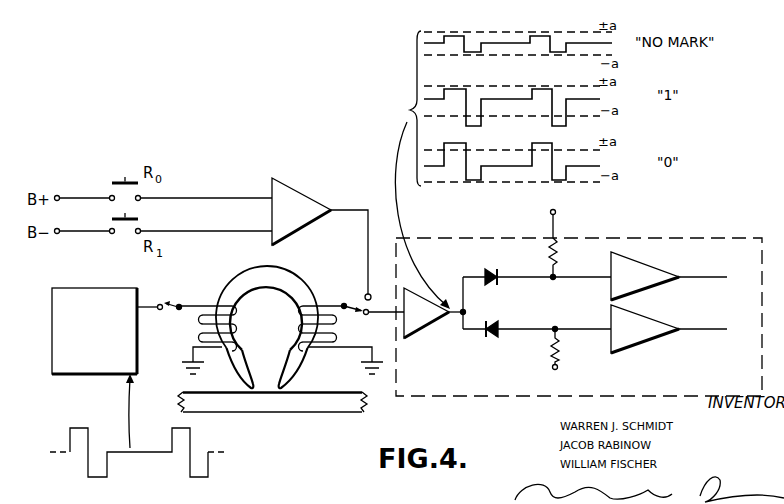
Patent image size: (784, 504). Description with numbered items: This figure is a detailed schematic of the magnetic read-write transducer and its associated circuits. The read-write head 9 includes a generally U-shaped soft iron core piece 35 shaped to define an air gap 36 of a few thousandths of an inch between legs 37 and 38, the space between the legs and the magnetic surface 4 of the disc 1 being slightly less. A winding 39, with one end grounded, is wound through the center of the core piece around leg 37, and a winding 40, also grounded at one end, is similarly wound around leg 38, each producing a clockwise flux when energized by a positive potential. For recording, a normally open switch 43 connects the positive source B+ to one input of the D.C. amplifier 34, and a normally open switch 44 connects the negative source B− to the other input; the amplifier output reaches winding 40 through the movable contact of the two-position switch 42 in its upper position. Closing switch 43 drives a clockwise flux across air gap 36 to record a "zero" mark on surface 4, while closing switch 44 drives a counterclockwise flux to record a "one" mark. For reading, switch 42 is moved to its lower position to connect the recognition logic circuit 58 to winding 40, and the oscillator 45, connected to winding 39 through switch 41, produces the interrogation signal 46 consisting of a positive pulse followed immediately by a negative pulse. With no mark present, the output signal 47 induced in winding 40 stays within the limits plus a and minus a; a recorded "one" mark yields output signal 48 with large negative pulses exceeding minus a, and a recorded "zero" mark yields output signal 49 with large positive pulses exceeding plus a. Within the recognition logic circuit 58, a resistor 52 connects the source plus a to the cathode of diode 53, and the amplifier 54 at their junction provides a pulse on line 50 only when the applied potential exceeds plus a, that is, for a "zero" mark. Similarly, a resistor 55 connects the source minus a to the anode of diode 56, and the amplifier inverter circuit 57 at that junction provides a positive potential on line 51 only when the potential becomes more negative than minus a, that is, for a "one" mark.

The disc 1 is at (272, 405).
The magnetic surface 4 is at (337, 393).
The read-write head 9 is at (264, 319).
The amplifier 34 is at (298, 190).
The core piece 35 is at (268, 321).
The air gap 36 is at (275, 373).
The leg 37 is at (248, 380).
The leg 38 is at (287, 381).
The winding 39 is at (198, 306).
The winding 40 is at (327, 305).
The switch 41 is at (177, 303).
The two-position switch 42 is at (356, 314).
The "R0" switch 43 is at (116, 181).
The "R1" switch 44 is at (135, 217).
The oscillator 45 is at (101, 288).
The interrogation signal 46 is at (193, 441).
The output signal 47 is at (500, 43).
The output signal 48 is at (487, 97).
The output signal 49 is at (490, 163).
The line 50 is at (701, 276).
The line 51 is at (710, 333).
The resistor 52 is at (558, 255).
The diode 53 is at (489, 270).
The amplifier 54 is at (628, 261).
The resistor 55 is at (552, 342).
The diode 56 is at (500, 322).
The amplifier inverter circuit 57 is at (645, 344).
The recognition logic circuit 58 is at (579, 300).